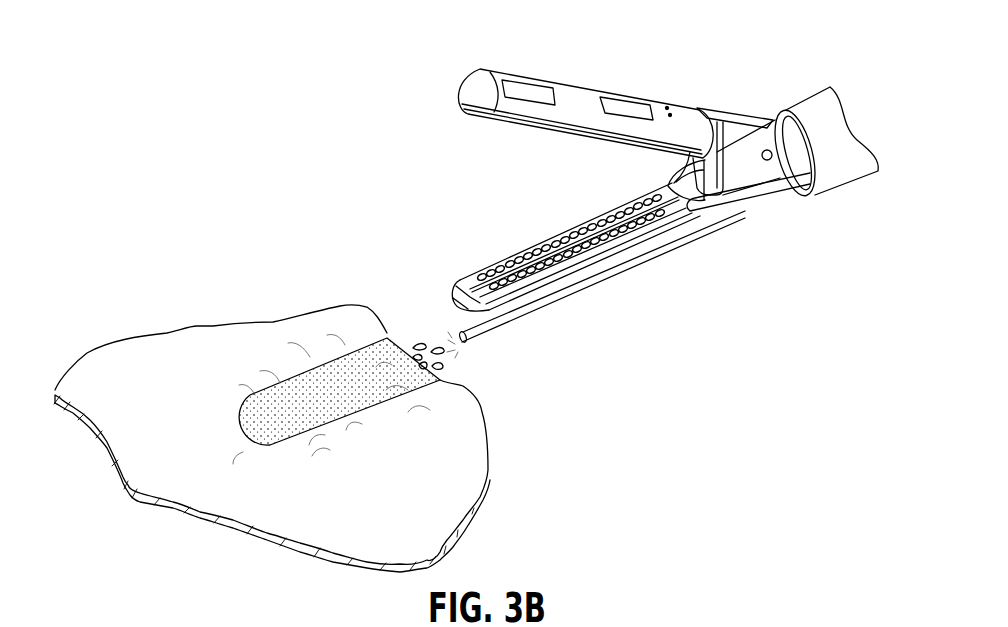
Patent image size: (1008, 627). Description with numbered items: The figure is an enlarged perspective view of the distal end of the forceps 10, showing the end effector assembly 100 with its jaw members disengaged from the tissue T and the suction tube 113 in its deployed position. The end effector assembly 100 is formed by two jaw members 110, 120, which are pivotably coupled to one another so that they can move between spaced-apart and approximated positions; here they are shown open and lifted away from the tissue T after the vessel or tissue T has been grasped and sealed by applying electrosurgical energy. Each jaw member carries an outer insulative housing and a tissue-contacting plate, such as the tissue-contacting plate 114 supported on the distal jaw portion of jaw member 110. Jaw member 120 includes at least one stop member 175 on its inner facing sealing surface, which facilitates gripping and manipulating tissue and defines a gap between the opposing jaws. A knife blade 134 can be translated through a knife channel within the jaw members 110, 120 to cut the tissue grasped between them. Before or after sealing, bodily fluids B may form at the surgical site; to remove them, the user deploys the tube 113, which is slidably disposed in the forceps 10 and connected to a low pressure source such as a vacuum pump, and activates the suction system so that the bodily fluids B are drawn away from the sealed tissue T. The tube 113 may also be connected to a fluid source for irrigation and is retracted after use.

The forceps 10 is at (595, 216).
The end effector assembly 100 is at (561, 200).
The jaw member 110 is at (577, 96).
The tube 113 is at (638, 257).
The tissue-contacting plate 114 is at (803, 106).
The jaw member 120 is at (545, 247).
The knife blade 134 is at (715, 180).
The stop member 175 is at (555, 242).
The tissue T is at (161, 344).
The bodily fluids B is at (461, 376).